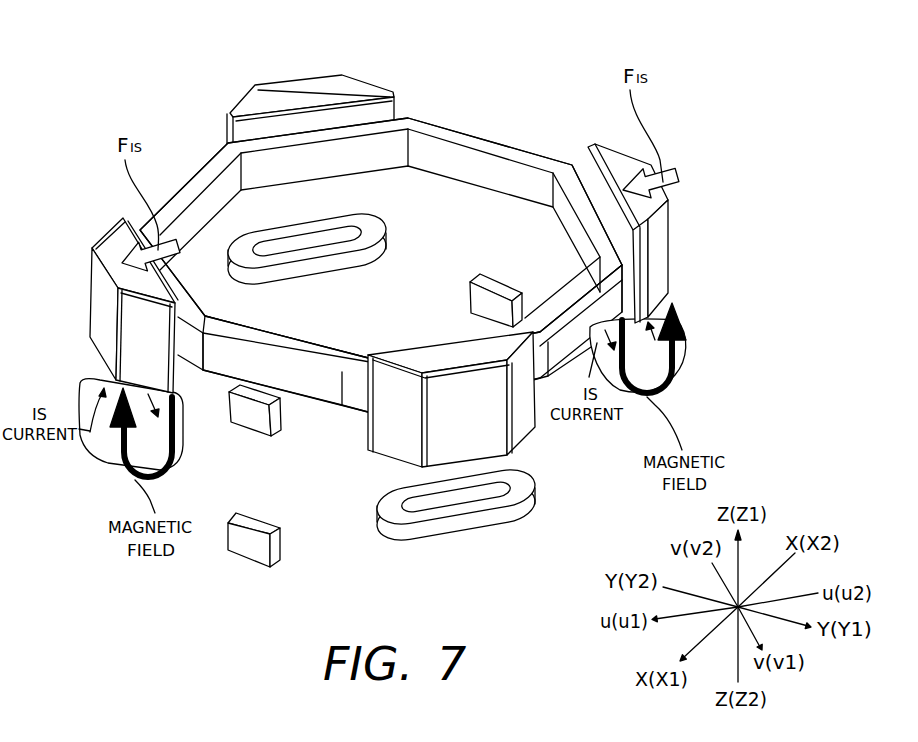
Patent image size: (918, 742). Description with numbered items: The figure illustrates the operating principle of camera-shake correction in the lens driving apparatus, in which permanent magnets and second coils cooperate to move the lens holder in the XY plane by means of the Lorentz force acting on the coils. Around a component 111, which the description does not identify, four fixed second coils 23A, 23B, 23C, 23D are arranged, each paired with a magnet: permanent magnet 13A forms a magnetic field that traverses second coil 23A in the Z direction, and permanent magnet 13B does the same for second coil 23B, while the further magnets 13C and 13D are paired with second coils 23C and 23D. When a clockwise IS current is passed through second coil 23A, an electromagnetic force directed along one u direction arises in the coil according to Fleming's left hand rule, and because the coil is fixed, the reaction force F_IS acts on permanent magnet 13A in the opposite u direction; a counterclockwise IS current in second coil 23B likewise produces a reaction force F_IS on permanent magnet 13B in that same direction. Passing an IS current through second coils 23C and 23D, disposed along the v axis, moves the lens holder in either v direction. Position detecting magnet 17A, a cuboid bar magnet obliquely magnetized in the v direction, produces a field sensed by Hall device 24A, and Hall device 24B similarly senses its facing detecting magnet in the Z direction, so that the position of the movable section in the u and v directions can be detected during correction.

The base (octagonal frame) 111 is at (434, 127).
The permanent magnet 13A is at (106, 242).
The permanent magnet 13B is at (657, 250).
The magnet 13C is at (513, 437).
The magnet 13D is at (345, 78).
The second coil 23A is at (110, 447).
The second coil 23B is at (683, 360).
The second coil 23C is at (473, 530).
The second coil 23D is at (389, 231).
The Hall device 24A is at (247, 550).
The Hall device 24B is at (510, 291).
The position detecting magnet 17A is at (250, 418).